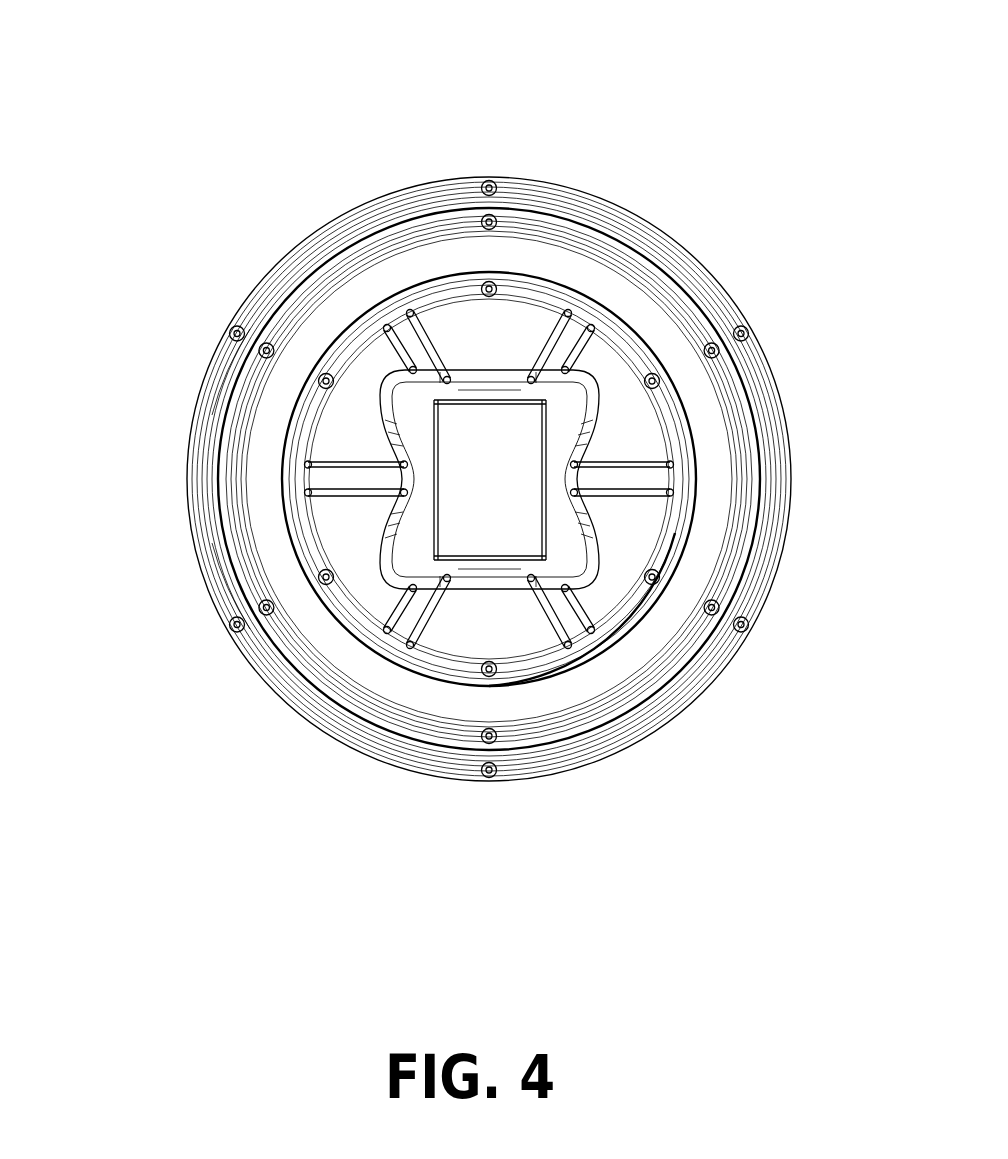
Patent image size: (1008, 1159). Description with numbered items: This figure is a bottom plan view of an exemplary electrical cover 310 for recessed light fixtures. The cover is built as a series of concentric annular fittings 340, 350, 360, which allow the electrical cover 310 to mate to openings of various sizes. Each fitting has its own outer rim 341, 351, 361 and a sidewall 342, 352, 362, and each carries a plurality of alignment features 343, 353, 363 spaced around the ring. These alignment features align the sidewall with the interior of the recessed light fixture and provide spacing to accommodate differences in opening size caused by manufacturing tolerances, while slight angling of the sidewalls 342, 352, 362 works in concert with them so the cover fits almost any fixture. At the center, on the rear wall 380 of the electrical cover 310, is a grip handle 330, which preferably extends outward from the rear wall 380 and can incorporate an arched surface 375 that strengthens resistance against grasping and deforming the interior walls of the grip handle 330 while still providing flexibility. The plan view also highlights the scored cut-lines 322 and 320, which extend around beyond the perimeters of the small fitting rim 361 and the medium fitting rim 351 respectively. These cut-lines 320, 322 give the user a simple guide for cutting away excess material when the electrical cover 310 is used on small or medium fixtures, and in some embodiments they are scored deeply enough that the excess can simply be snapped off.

The electrical cover 310 is at (241, 143).
The scored cut-line 320 is at (528, 208).
The scored cut-line 322 is at (427, 284).
The grip handle 330 is at (352, 439).
The concentric annular fitting 340 is at (176, 520).
The outer rim 341 is at (208, 565).
The sidewall 342 is at (236, 617).
The alignment features 343 is at (230, 329).
The concentric annular fitting 350 is at (328, 708).
The outer rim 351 is at (360, 707).
The sidewall 352 is at (413, 722).
The alignment features 353 is at (266, 343).
The concentric annular fitting 360 is at (619, 650).
The outer rim 361 is at (688, 516).
The sidewall 362 is at (675, 535).
The alignment features 363 is at (324, 376).
The arched surface 375 is at (490, 480).
The rear wall 380 is at (489, 479).